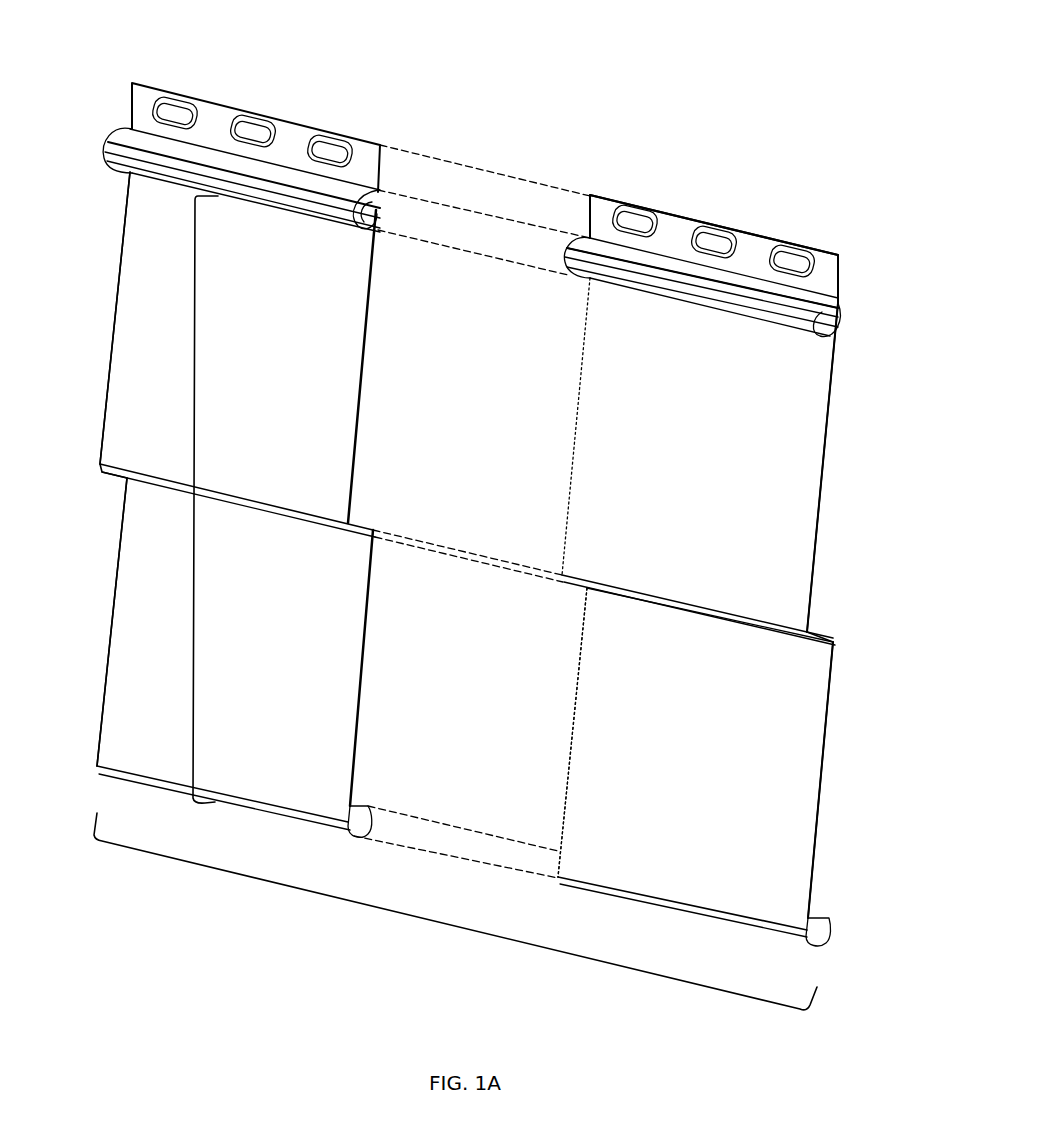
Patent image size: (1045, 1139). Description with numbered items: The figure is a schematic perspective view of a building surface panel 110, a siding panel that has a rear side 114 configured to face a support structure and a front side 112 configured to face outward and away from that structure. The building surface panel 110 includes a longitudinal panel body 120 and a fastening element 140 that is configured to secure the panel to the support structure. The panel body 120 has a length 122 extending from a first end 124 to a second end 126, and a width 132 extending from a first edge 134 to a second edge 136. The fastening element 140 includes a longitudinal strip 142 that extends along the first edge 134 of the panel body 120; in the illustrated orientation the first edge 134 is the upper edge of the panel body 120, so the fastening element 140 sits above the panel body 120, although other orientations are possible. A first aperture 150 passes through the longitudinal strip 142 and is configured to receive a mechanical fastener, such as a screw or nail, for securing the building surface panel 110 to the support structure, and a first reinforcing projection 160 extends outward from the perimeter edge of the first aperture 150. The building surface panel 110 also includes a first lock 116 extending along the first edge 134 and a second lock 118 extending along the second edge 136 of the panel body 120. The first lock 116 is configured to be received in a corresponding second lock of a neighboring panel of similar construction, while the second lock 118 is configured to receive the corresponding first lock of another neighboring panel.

The building surface panel 110 is at (717, 100).
The front side 112 is at (352, 283).
The rear side 114 is at (392, 270).
The first lock 116 is at (642, 284).
The second lock 118 is at (830, 932).
The longitudinal panel body 120 is at (677, 710).
The length 122 is at (455, 911).
The first end 124 is at (84, 404).
The second end 126 is at (850, 572).
The width 132 is at (191, 661).
The first edge 134 is at (250, 243).
The second edge 136 is at (258, 772).
The fastening element 140 is at (562, 202).
The longitudinal strip 142 is at (677, 233).
The first aperture 150 is at (813, 278).
The first reinforcing projection 160 is at (783, 250).